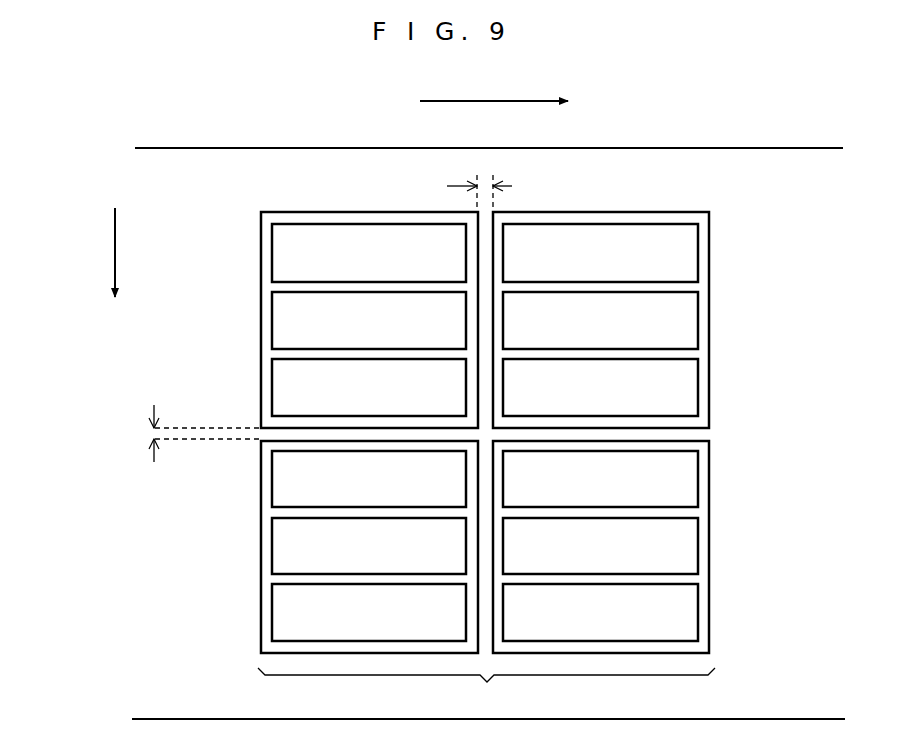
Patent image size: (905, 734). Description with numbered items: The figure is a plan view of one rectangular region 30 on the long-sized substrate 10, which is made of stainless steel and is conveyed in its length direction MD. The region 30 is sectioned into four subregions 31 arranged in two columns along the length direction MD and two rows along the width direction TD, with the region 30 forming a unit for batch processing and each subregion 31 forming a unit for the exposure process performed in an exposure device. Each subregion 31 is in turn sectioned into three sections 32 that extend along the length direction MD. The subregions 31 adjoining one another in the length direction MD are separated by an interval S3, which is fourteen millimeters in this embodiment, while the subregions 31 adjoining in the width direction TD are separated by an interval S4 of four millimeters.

The long-sized substrate 10 is at (713, 156).
The rectangular region 30 is at (485, 461).
The subregion 31 is at (261, 318).
The section 32 is at (612, 266).
The interval between subregions adjoining in the length direction S3 is at (478, 181).
The interval between subregions adjoining in the width direction S4 is at (191, 428).
The length direction MD is at (488, 101).
The width direction TD is at (115, 240).